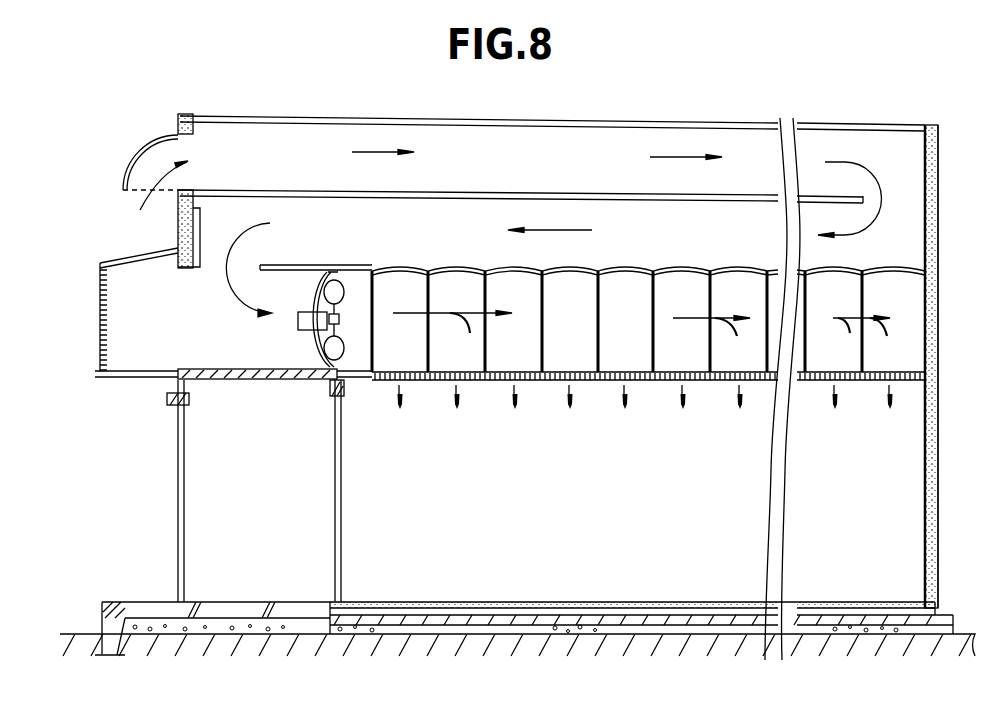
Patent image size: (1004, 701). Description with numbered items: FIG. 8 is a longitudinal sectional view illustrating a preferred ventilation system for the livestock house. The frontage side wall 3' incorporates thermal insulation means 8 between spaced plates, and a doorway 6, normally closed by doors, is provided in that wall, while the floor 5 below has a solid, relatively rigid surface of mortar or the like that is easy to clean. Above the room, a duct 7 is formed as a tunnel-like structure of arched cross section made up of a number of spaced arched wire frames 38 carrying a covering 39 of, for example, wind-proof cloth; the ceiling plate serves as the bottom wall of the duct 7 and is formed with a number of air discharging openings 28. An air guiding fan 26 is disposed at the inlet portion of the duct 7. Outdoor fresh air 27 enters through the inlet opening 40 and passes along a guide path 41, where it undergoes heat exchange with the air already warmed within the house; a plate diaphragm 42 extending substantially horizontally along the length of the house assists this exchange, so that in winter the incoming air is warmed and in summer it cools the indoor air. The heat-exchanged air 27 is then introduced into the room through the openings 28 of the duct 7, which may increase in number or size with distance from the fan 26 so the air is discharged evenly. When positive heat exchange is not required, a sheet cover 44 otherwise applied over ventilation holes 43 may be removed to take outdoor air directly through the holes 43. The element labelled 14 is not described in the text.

The frontage side wall 3' is at (565, 366).
The floor 5 is at (535, 602).
The doorway 6 is at (180, 538).
The duct 7 is at (624, 327).
The thermal insulation means 8 is at (928, 493).
The foundation layer 14 is at (614, 612).
The air guiding fan 26 is at (310, 322).
The outdoor fresh air 27 is at (500, 294).
The air discharging openings 28 is at (510, 372).
The arched wire frames 38 is at (655, 290).
The covering 39 is at (643, 267).
The inlet opening 40 is at (143, 171).
The guide path 41 is at (581, 174).
The plate diaphragm 42 is at (450, 191).
The ventilation holes 43 is at (106, 340).
The sheet cover 44 is at (102, 313).